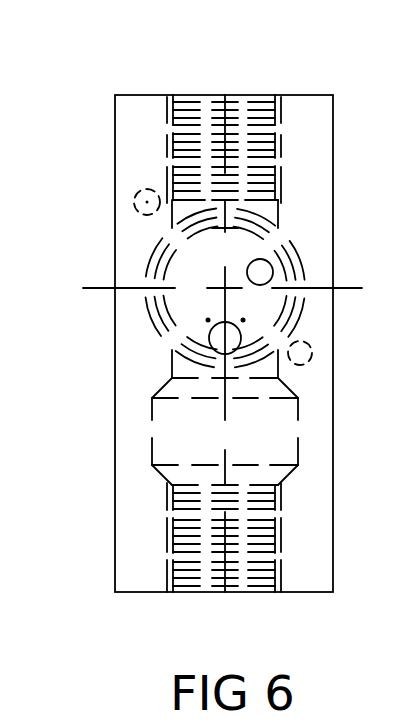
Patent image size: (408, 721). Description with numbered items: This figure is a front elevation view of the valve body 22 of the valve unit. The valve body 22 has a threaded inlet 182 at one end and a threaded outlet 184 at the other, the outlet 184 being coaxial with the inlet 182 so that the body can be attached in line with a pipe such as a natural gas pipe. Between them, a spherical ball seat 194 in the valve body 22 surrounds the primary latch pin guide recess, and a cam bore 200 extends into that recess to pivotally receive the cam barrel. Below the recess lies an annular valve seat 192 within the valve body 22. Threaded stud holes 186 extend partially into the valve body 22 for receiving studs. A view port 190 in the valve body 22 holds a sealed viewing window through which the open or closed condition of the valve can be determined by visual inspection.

The valve body 22 is at (123, 118).
The inlet 182 is at (205, 597).
The outlet 184 is at (253, 98).
The threaded stud holes 186 is at (312, 352).
The view port 190 is at (205, 330).
The annular valve seat 192 is at (155, 403).
The spherical ball seat 194 is at (157, 233).
The cam bore 200 is at (272, 267).